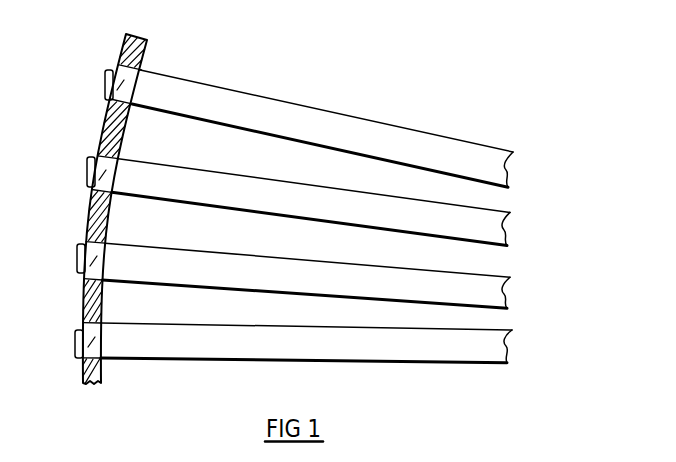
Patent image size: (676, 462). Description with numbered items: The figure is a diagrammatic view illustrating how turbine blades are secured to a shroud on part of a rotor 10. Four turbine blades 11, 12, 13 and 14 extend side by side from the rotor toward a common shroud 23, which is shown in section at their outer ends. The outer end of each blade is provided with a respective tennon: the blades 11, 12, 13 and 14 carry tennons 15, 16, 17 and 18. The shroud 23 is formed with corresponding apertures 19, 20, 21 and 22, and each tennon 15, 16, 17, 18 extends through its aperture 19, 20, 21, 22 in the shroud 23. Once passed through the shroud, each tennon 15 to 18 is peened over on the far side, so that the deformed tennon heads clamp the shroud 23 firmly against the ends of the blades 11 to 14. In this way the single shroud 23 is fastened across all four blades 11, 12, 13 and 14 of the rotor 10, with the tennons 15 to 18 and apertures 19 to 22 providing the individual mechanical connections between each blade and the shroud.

The rotor 10 is at (424, 94).
The turbine blade 11 is at (504, 162).
The turbine blade 12 is at (500, 230).
The turbine blade 13 is at (500, 298).
The turbine blade 14 is at (507, 352).
The tennon 15 is at (110, 101).
The tennon 16 is at (96, 180).
The tennon 17 is at (86, 268).
The tennon 18 is at (83, 355).
The aperture 19 is at (141, 70).
The aperture 20 is at (118, 157).
The aperture 21 is at (110, 238).
The aperture 22 is at (101, 327).
The shroud 23 is at (123, 58).